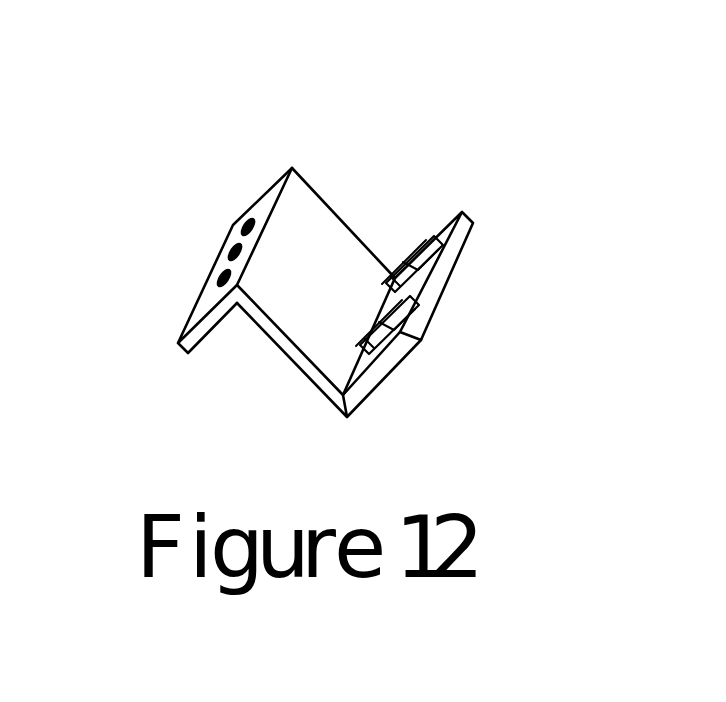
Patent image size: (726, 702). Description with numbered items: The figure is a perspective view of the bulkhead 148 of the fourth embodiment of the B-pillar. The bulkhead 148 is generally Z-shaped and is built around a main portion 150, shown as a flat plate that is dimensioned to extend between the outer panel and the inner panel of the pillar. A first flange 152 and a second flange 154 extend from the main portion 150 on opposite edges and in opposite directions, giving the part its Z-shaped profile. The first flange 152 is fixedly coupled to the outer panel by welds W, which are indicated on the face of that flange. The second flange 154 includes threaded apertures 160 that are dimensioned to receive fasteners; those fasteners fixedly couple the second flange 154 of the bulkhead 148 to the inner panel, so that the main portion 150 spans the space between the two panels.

The bulkhead 148 is at (343, 58).
The main portion 150 is at (327, 243).
The first flange 152 is at (190, 310).
The second flange 154 is at (443, 282).
The threaded apertures 160 is at (407, 263).
The welds w is at (216, 277).